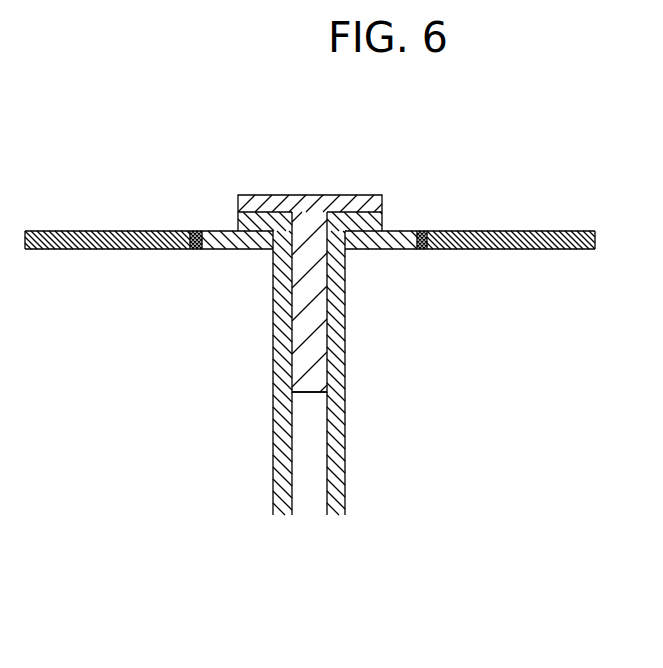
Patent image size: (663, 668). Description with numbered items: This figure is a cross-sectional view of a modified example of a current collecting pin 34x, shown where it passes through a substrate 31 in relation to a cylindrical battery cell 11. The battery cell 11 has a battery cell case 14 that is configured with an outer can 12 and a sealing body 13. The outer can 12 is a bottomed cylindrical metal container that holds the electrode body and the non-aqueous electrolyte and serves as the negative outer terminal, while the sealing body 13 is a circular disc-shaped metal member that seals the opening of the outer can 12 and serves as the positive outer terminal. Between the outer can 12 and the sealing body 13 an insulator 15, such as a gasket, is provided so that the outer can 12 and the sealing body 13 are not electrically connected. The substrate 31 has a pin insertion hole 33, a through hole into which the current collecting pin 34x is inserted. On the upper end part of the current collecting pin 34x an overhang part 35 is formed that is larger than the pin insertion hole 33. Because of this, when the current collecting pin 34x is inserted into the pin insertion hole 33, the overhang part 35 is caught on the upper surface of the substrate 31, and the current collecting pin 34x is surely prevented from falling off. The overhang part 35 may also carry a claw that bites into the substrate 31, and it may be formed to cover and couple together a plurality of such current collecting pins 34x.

The cylindrical battery cell 11 is at (162, 390).
The outer can 12 is at (220, 230).
The sealing body 13 is at (58, 230).
The battery cell case 14 is at (505, 231).
The insulator 15 is at (196, 230).
The substrate 31 is at (365, 212).
The pin insertion hole 33 is at (325, 207).
The overhang part 35 is at (262, 195).
The current collecting pin 34x is at (306, 393).